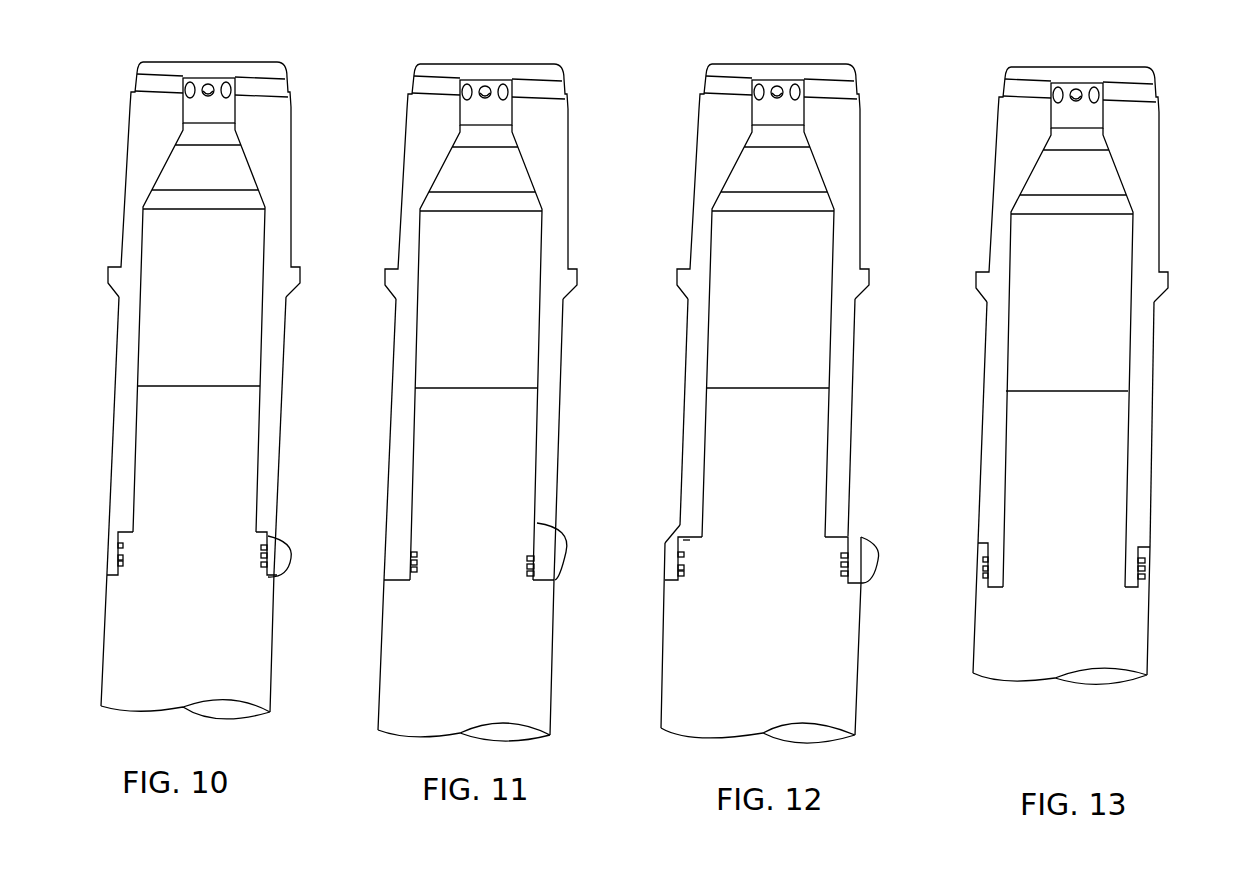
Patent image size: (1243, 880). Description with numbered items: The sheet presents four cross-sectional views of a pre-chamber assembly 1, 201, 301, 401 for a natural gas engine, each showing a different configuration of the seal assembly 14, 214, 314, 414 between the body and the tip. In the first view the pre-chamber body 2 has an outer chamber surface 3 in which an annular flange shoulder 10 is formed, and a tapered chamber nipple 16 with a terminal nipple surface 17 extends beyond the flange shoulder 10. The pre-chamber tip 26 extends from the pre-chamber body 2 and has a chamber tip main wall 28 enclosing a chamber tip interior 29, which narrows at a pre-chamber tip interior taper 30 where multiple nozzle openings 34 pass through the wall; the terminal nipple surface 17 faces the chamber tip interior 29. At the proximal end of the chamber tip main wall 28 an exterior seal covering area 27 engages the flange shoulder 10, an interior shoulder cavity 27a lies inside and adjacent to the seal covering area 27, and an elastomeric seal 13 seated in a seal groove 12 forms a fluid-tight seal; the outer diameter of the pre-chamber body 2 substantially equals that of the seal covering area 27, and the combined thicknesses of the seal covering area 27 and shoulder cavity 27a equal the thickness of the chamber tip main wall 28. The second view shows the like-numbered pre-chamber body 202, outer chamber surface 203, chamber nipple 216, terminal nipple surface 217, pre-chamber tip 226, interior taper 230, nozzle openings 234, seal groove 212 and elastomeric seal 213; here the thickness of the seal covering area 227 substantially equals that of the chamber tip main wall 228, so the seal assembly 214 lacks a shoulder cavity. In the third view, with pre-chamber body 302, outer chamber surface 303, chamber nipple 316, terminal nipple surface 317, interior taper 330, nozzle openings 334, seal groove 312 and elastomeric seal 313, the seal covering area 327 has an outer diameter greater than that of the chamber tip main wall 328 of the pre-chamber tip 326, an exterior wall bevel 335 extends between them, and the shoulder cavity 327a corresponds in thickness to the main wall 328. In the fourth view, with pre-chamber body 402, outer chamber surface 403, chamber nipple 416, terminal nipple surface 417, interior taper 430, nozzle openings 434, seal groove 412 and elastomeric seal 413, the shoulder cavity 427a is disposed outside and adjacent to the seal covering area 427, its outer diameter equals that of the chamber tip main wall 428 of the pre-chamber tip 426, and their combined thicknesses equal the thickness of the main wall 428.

In FIG. 10, the pre-chamber assembly 1 is at (102, 36).
In FIG. 10, the pre-chamber body 2 is at (153, 646).
In FIG. 10, the outer chamber surface 3 is at (102, 617).
In FIG. 10, the flange shoulder 10 is at (112, 543).
In FIG. 10, the seal groove 12 is at (278, 540).
In FIG. 10, the elastomeric seal 13 is at (124, 562).
In FIG. 10, the seal assembly 14 is at (285, 515).
In FIG. 10, the chamber nipple 16 is at (162, 462).
In FIG. 10, the terminal nipple surface 17 is at (198, 386).
In FIG. 10, the pre-chamber tip 26 is at (118, 208).
In FIG. 10, the seal covering area 27 is at (112, 550).
In FIG. 10, the shoulder cavity 27a is at (123, 540).
In FIG. 10, the chamber tip main wall 28 is at (127, 406).
In FIG. 10, the chamber tip interior 29 is at (257, 344).
In FIG. 11, the chamber tip interior 29 is at (540, 350).
In FIG. 12, the chamber tip interior 29 is at (832, 360).
In FIG. 13, the chamber tip interior 29 is at (1127, 360).
In FIG. 10, the pre-chamber tip interior taper 30 is at (246, 174).
In FIG. 10, the nozzle openings 34 is at (223, 82).
In FIG. 11, the pre-chamber assembly 201 is at (399, 38).
In FIG. 11, the container 202 is at (427, 660).
In FIG. 11, the container wall 203 is at (384, 604).
In FIG. 11, the latch 212 is at (556, 527).
In FIG. 11, the ribs 213 is at (419, 570).
In FIG. 11, the seal assembly 214 is at (571, 502).
In FIG. 11, the body 216 is at (440, 452).
In FIG. 11, the shoulder 217 is at (493, 388).
In FIG. 11, the cap 226 is at (395, 210).
In FIG. 11, the seal covering area 227 is at (410, 565).
In FIG. 11, the chamber tip main wall 228 is at (405, 410).
In FIG. 11, the neck 230 is at (523, 179).
In FIG. 11, the openings 234 is at (500, 84).
In FIG. 12, the pre-chamber assembly 301 is at (689, 35).
In FIG. 12, the container 302 is at (723, 640).
In FIG. 12, the container wall 303 is at (665, 623).
In FIG. 12, the latch 312 is at (862, 536).
In FIG. 12, the ribs 313 is at (683, 567).
In FIG. 12, the seal assembly 314 is at (868, 498).
In FIG. 12, the body 316 is at (730, 444).
In FIG. 12, the shoulder 317 is at (785, 388).
In FIG. 12, the pre-chamber tip 326 is at (687, 201).
In FIG. 12, the seal covering area 327 is at (677, 552).
In FIG. 12, the shoulder cavity 327a is at (683, 540).
In FIG. 12, the chamber tip main wall 328 is at (697, 408).
In FIG. 12, the neck 330 is at (816, 184).
In FIG. 12, the openings 334 is at (795, 84).
In FIG. 12, the exterior wall bevel 335 is at (672, 535).
In FIG. 13, the pre-chamber assembly 401 is at (981, 38).
In FIG. 13, the container 402 is at (1023, 613).
In FIG. 13, the container wall 403 is at (970, 638).
In FIG. 13, the latch 412 is at (1170, 578).
In FIG. 13, the ribs 413 is at (983, 575).
In FIG. 13, the seal assembly 414 is at (1170, 522).
In FIG. 13, the body 416 is at (1030, 447).
In FIG. 13, the shoulder 417 is at (1080, 391).
In FIG. 13, the pre-chamber tip 426 is at (983, 186).
In FIG. 13, the seal covering area 427 is at (983, 558).
In FIG. 13, the shoulder cavity 427a is at (985, 546).
In FIG. 13, the chamber tip main wall 428 is at (995, 413).
In FIG. 13, the neck 430 is at (1116, 184).
In FIG. 13, the openings 434 is at (1094, 87).